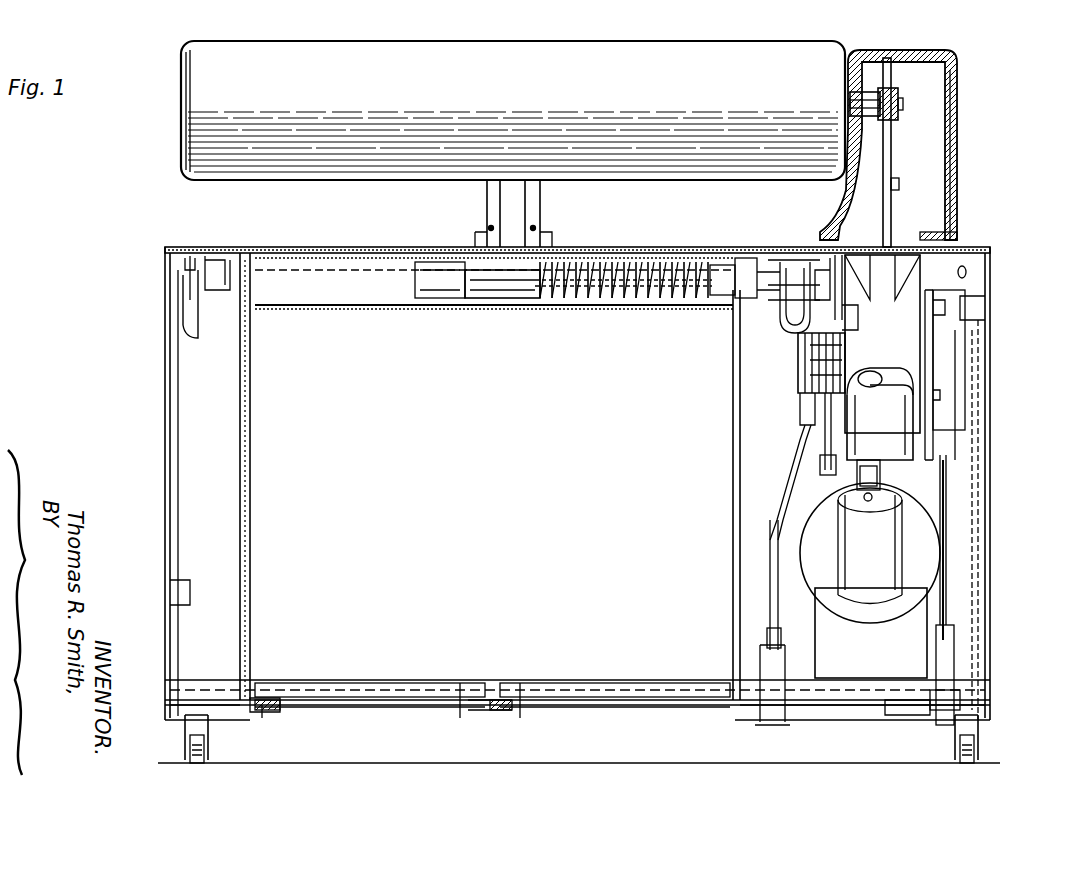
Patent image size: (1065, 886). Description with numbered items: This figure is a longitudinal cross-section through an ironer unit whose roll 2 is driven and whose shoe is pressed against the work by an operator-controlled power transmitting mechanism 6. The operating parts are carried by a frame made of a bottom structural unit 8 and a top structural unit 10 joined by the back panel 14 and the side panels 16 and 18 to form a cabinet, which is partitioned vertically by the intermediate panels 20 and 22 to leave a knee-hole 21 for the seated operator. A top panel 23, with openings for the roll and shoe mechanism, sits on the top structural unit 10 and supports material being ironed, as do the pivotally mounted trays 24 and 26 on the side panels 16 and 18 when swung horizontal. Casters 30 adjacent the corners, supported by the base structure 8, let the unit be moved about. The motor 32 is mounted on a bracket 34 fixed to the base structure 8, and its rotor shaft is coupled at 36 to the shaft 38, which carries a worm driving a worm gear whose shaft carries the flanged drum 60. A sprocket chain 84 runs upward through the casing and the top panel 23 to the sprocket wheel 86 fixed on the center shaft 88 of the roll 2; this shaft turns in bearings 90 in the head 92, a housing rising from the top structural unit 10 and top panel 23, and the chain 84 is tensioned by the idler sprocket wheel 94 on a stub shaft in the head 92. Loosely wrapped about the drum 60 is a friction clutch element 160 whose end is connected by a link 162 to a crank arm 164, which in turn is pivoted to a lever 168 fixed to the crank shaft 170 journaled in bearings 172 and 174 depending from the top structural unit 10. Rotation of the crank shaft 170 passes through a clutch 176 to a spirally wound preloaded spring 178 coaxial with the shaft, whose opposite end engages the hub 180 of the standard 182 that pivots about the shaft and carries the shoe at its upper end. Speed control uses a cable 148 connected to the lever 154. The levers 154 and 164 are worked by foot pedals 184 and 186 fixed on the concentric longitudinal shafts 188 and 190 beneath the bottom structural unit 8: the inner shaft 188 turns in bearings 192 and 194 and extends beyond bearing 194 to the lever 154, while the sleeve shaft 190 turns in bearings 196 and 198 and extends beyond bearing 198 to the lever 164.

The roll 2 is at (181, 165).
The power transmitting mechanism 6 is at (960, 382).
The bottom structural unit 8 is at (200, 681).
The top structural unit 10 is at (228, 276).
The back panel 14 is at (962, 548).
The side panel 16 is at (166, 604).
The side panel 18 is at (985, 605).
The intermediate panel 20 is at (262, 530).
The knee-hole 21 is at (330, 617).
The intermediate panel 22 is at (733, 525).
The top panel 23 is at (628, 255).
The tray 24 is at (166, 510).
The tray 26 is at (992, 507).
The casters 30 is at (185, 755).
The motor 32 is at (817, 522).
The bracket 34 is at (871, 633).
The coupling 36 is at (881, 476).
The shaft 38 is at (871, 462).
The drum 60 is at (798, 356).
The sprocket chain 84 is at (891, 162).
The sprocket wheel 86 is at (893, 78).
The center shaft 88 is at (868, 92).
The bearings 90 is at (850, 97).
The head 92 is at (958, 157).
The idler sprocket wheel 94 is at (899, 186).
The cable 148 is at (948, 478).
The lever 154 is at (960, 662).
The friction clutch element 160 is at (827, 432).
The link 162 is at (790, 465).
The lever 164 is at (786, 722).
The lever 168 is at (835, 310).
The crank shaft 170 is at (720, 305).
The bearing 172 is at (447, 300).
The bearing 174 is at (778, 295).
The clutch 176 is at (695, 300).
The spring 178 is at (632, 300).
The hub 180 is at (507, 300).
The standard 182 is at (537, 204).
The foot pedal 184 is at (368, 681).
The foot pedal 186 is at (600, 683).
The shaft 188 is at (380, 706).
The shaft 190 is at (635, 706).
The bearing 192 is at (258, 716).
The bearing 194 is at (903, 716).
The bearing 196 is at (492, 712).
The bearing 198 is at (757, 715).